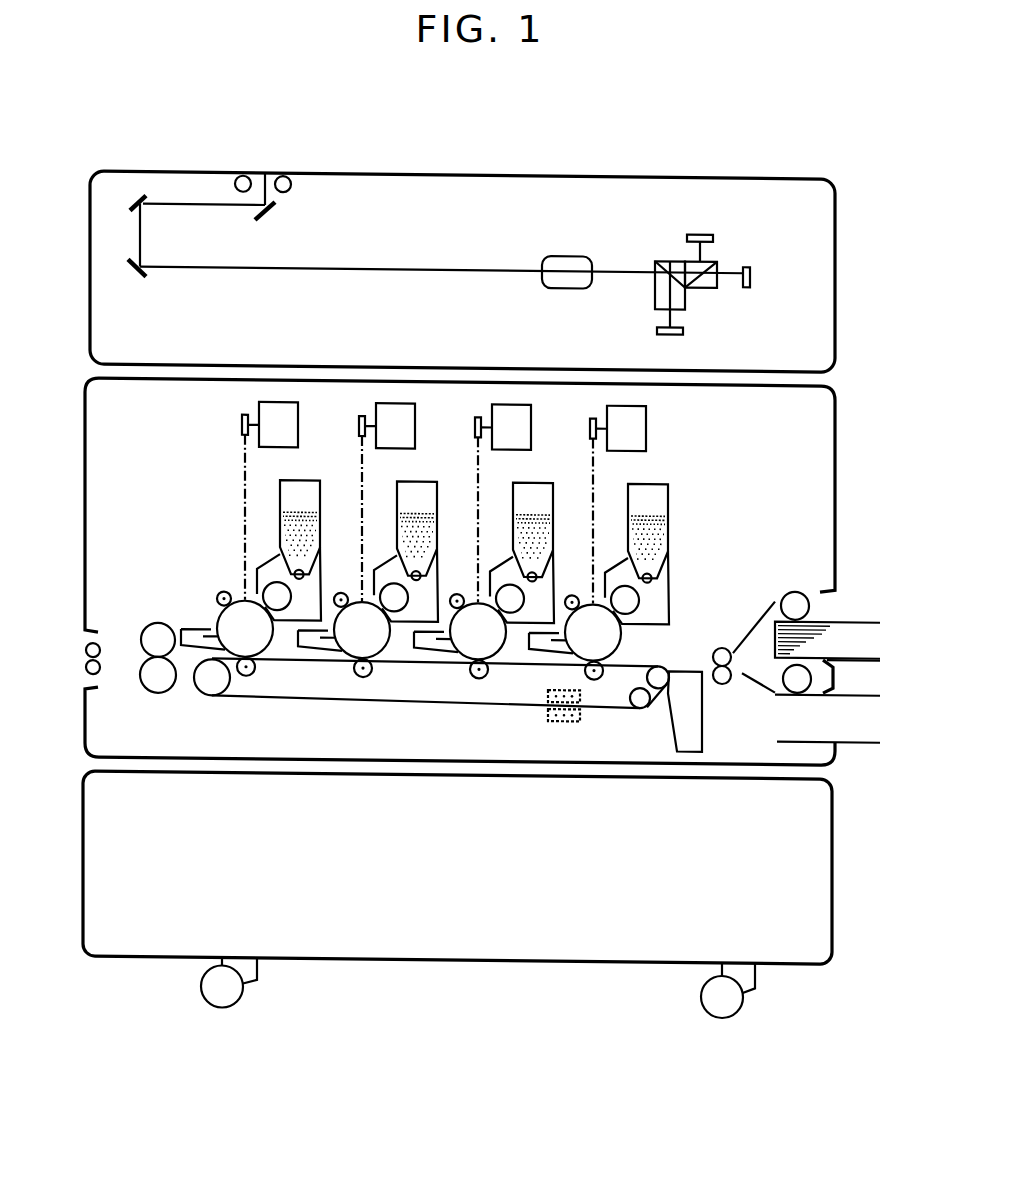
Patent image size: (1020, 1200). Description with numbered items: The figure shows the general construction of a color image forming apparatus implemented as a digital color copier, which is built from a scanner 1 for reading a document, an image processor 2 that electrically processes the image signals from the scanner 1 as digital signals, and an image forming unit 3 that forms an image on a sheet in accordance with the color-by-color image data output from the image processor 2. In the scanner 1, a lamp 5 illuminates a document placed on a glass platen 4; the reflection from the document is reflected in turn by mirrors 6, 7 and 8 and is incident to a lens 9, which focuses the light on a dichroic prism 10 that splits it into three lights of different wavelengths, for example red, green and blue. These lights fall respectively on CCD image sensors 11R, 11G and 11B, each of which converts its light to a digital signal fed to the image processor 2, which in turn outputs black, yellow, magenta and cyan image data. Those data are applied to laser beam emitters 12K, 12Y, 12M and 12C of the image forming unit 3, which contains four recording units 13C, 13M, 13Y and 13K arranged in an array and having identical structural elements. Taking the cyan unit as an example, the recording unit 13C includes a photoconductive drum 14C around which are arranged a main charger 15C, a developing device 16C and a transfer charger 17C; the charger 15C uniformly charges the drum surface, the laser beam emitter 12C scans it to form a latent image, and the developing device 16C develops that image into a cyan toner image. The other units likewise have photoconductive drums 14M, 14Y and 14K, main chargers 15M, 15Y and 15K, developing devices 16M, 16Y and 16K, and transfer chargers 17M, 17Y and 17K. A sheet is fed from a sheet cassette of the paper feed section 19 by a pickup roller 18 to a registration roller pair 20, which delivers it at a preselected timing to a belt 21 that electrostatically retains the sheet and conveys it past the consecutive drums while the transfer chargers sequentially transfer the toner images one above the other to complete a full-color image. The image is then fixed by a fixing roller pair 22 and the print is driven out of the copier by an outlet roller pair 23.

The scanner 1 is at (790, 171).
The image processor 2 is at (832, 814).
The image forming unit 3 is at (835, 414).
The glass platen 4 is at (645, 167).
The lamp 5 is at (241, 174).
The mirror 6 is at (270, 214).
The mirror 7 is at (150, 195).
The mirror 8 is at (137, 278).
The lens 9 is at (567, 250).
The dichroic prism 10 is at (660, 256).
The CCD image sensor 11G is at (707, 228).
The CCD image sensor 11R is at (658, 320).
The CCD image sensor 11B is at (747, 281).
The laser beam emitter 12C is at (280, 400).
The laser beam emitter 12M is at (396, 400).
The laser beam emitter 12Y is at (512, 400).
The laser beam emitter 12K is at (627, 400).
The recording unit 13C is at (215, 503).
The recording unit 13M is at (355, 511).
The recording unit 13Y is at (463, 509).
The recording unit 13K is at (685, 483).
The photoconductive drum 14C is at (278, 655).
The photoconductive drum 14M is at (405, 655).
The photoconductive drum 14Y is at (505, 655).
The photoconductive drum 14K is at (622, 634).
The main charger 15C is at (222, 590).
The main charger 15M is at (341, 590).
The main charger 15Y is at (457, 590).
The main charger 15K is at (572, 590).
The developing device 16C is at (262, 566).
The developing device 16M is at (379, 566).
The developing device 16Y is at (495, 566).
The developing device 16K is at (610, 566).
The transfer charger 17C is at (247, 675).
The transfer charger 17M is at (363, 675).
The transfer charger 17Y is at (479, 675).
The transfer charger 17K is at (594, 675).
The pickup roller 18 is at (794, 584).
The paper feed section 19 is at (846, 598).
The registration roller pair 20 is at (726, 679).
The belt 21 is at (200, 691).
The fixing roller pair 22 is at (143, 690).
The outlet roller pair 23 is at (87, 651).